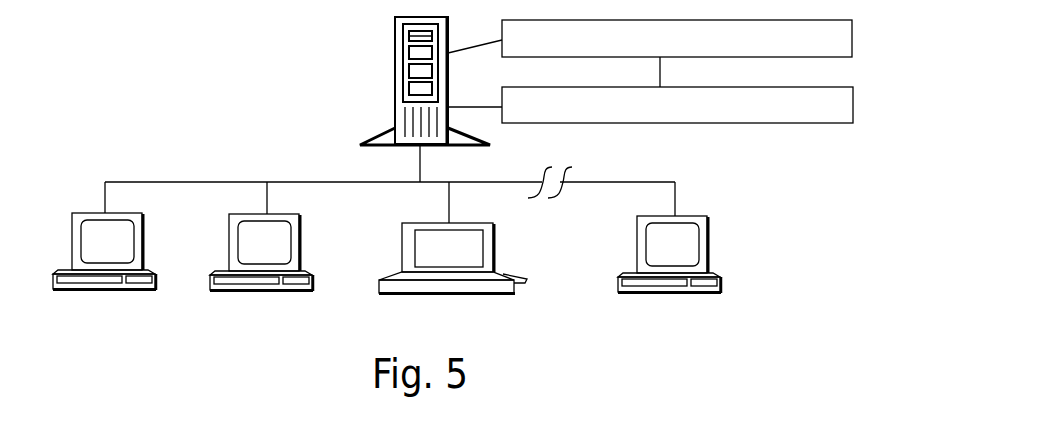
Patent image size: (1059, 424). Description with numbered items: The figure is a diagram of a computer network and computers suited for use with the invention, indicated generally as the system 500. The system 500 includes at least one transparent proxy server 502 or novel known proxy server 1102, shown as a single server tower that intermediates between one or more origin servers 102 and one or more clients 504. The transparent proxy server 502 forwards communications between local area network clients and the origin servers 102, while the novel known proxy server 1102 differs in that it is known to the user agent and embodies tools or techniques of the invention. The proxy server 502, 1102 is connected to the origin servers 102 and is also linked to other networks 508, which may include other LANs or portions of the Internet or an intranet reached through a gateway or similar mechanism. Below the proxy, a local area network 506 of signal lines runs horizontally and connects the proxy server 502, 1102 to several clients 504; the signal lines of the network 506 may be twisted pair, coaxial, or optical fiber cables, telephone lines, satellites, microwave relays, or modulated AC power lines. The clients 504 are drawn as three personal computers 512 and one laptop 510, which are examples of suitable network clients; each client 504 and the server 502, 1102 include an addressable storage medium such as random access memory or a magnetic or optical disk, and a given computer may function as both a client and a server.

The computer system 500 is at (453, 177).
The transparent proxy server 502 is at (363, 99).
The novel known proxy server 1102 is at (363, 99).
The origin server 102 is at (812, 50).
The other networks 508 is at (827, 116).
The local area network 506 is at (390, 183).
The client 504 is at (415, 275).
The personal computer 512 is at (415, 275).
The laptop 510 is at (480, 275).